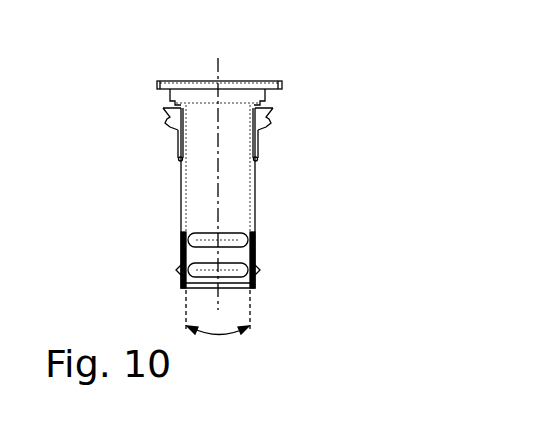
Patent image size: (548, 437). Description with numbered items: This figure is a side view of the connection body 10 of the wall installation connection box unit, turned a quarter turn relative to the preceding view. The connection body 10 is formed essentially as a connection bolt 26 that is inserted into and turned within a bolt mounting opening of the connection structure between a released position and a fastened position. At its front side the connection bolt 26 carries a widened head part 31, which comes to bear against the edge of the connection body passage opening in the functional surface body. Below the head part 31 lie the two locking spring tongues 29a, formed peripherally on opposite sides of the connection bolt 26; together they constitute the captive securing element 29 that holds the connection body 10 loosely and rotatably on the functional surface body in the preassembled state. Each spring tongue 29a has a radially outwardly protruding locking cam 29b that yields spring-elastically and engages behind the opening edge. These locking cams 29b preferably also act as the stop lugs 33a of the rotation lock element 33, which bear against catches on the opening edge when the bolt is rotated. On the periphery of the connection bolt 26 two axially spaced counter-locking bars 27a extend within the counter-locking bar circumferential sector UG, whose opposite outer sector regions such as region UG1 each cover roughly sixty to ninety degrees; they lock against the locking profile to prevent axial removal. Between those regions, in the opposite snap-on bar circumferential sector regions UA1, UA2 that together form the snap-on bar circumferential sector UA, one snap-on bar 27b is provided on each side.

The connection body 10 is at (150, 196).
The connection bolt 26 is at (180, 198).
The counter-locking bars 27a is at (237, 270).
The snap-on bar 27b is at (178, 270).
The captive securing element 29 is at (226, 137).
The locking spring tongues 29a is at (226, 137).
The locking cam 29b is at (177, 130).
The widened head part 31 is at (283, 84).
The rotation lock element 33 is at (280, 65).
The stop lugs 33a is at (178, 104).
The snap-on bar circumferential sector UA is at (208, 299).
The snap-on bar circumferential sector region UA1 is at (208, 299).
The snap-on bar circumferential sector region UA2 is at (178, 271).
The counter-locking bar circumferential sector UG is at (260, 356).
The counter-locking bar circumferential sector region UG1 is at (221, 334).